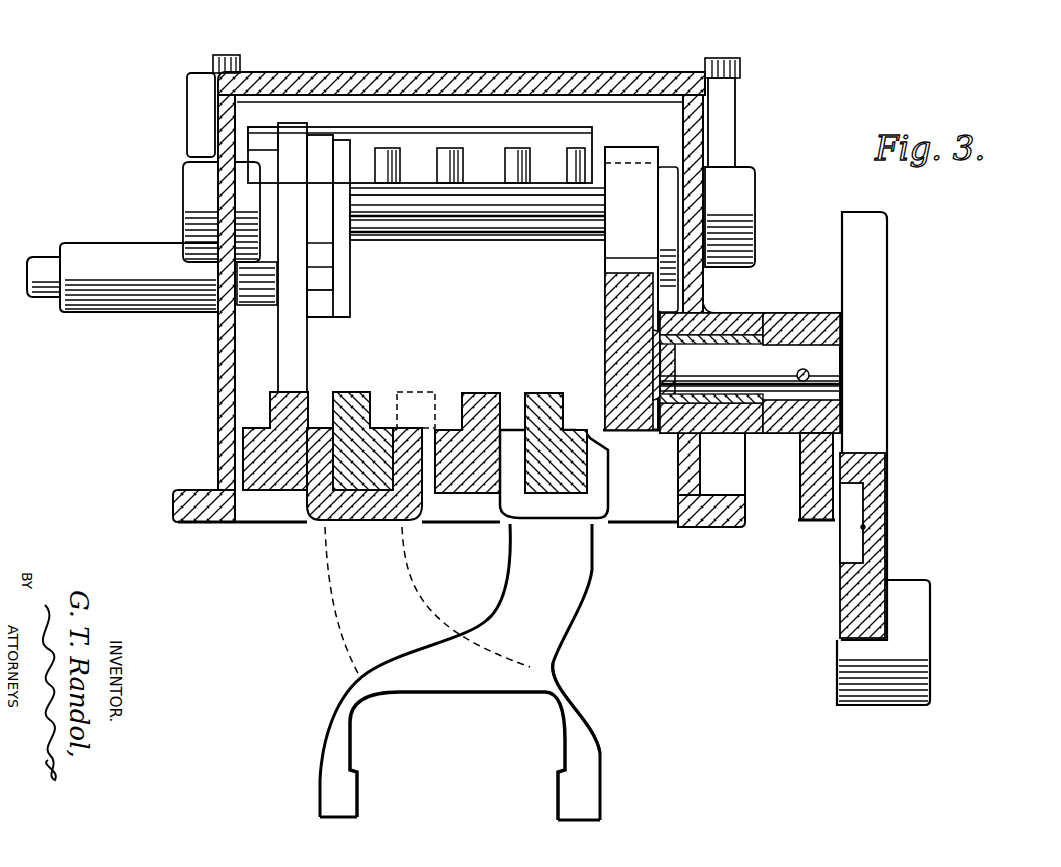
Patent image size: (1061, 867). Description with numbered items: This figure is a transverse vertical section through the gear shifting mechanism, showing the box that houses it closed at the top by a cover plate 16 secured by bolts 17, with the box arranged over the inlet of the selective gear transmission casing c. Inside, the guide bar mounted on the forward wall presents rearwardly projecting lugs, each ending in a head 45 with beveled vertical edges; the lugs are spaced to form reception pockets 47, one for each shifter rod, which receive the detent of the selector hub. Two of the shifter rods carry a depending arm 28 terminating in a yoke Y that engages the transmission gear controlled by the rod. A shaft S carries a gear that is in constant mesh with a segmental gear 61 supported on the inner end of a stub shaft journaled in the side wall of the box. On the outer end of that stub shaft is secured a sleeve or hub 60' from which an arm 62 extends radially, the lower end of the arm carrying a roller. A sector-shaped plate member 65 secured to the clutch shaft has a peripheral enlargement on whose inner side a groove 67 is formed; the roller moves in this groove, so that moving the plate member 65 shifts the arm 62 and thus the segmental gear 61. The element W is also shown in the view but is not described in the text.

The cover plate 16 is at (496, 61).
The bolts 17 is at (728, 65).
The reception pockets 47 is at (463, 167).
The head 45 is at (582, 167).
The shaft S is at (508, 207).
The segmental gear 61 is at (605, 313).
The selective gear transmission casing c is at (698, 312).
The worm wheel W is at (735, 373).
The sleeve or hub 60' is at (875, 458).
The arm 62 is at (800, 517).
The plate member 65 is at (872, 500).
The groove 67 is at (862, 527).
The arm 28 is at (378, 603).
The yoke Y is at (550, 684).